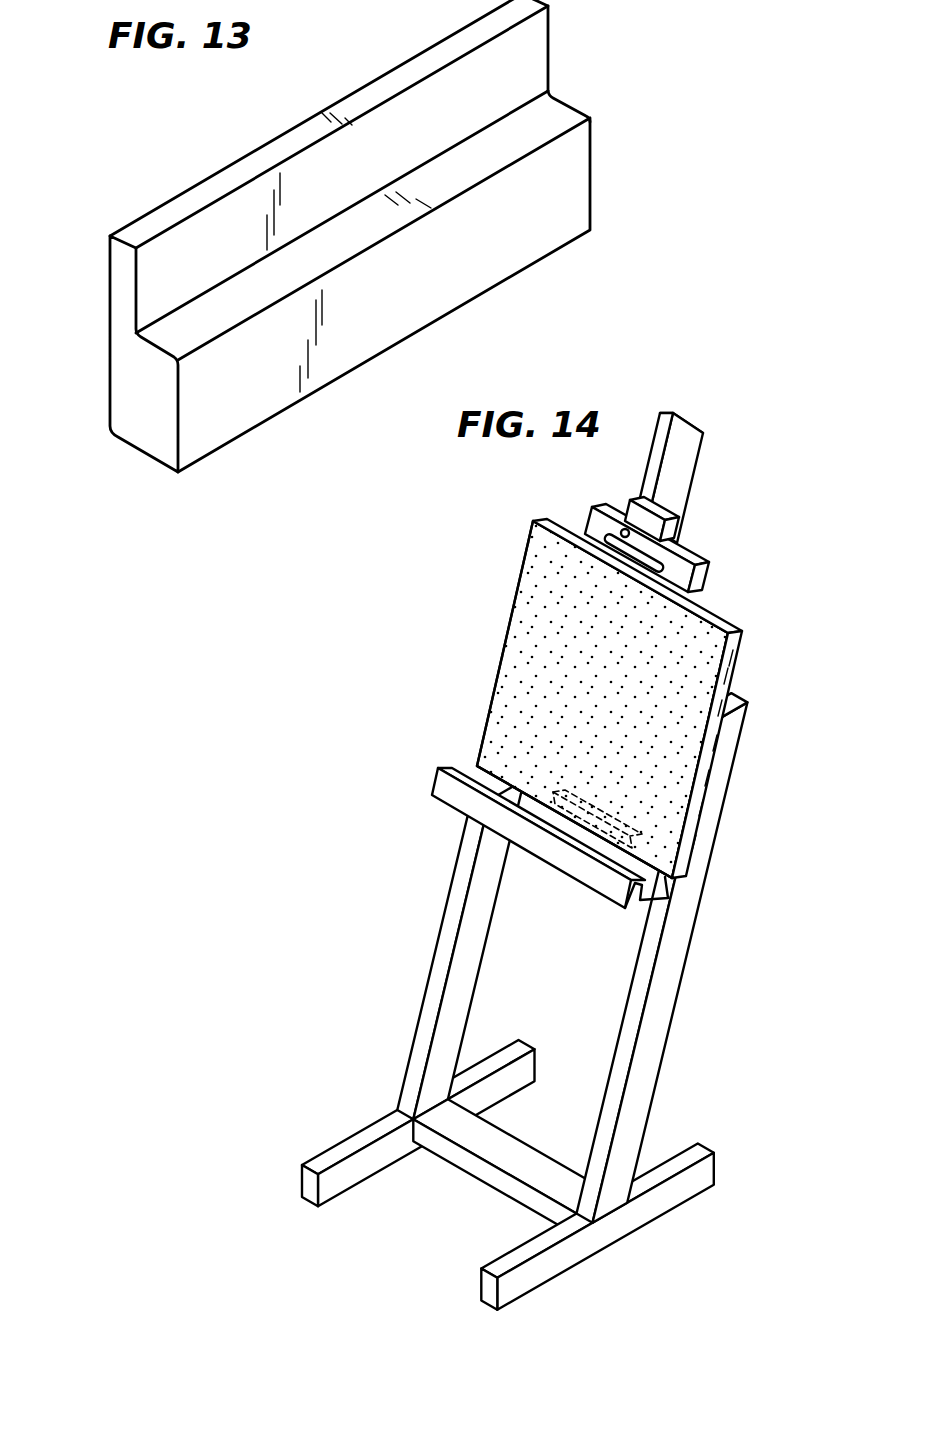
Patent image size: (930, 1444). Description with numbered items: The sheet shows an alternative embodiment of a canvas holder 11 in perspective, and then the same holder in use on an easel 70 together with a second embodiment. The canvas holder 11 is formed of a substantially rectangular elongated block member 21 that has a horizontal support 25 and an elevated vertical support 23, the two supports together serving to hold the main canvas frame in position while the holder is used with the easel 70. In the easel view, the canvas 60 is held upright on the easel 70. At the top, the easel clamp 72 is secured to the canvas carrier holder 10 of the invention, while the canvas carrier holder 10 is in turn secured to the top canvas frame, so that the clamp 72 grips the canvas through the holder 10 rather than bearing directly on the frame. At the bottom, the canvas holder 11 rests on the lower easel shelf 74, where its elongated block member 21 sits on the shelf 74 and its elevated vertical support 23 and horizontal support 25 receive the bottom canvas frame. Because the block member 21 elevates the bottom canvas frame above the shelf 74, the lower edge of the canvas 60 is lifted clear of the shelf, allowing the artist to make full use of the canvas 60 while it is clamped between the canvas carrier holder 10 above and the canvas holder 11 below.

In FIG. 14, the canvas carrier holder 10 is at (677, 568).
In FIG. 13, the canvas holder 11 is at (337, 236).
In FIG. 14, the canvas holder 11 is at (603, 838).
In FIG. 13, the elongated block member 21 is at (132, 392).
In FIG. 13, the elevated vertical support 23 is at (122, 282).
In FIG. 13, the horizontal support 25 is at (553, 122).
In FIG. 14, the canvas 60 is at (522, 648).
In FIG. 14, the easel 70 is at (725, 775).
In FIG. 14, the easel clamp 72 is at (683, 528).
In FIG. 14, the lower easel shelf 74 is at (433, 785).